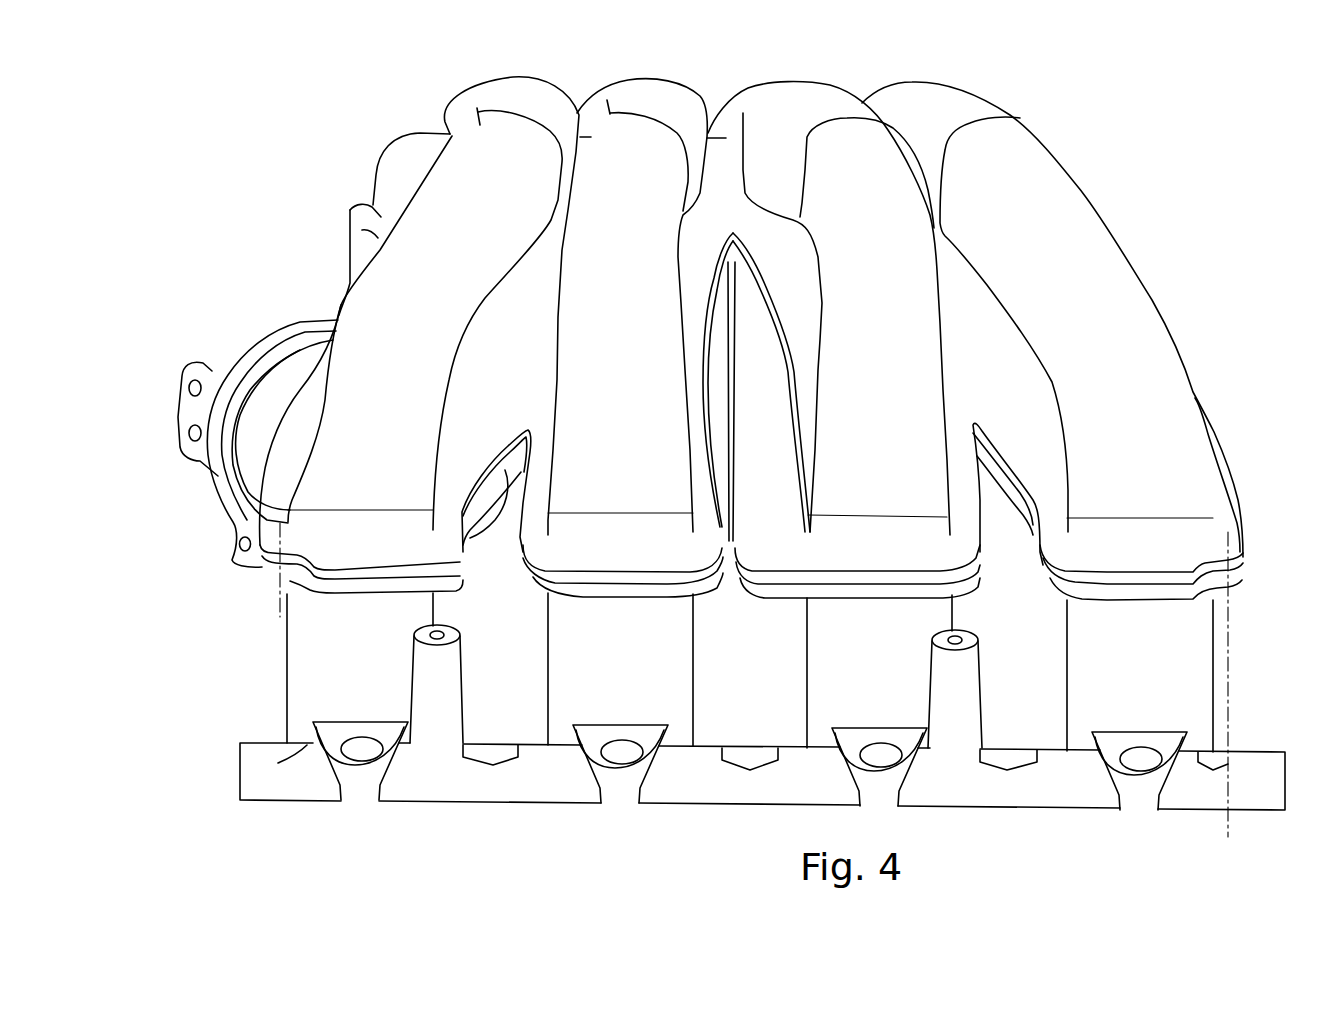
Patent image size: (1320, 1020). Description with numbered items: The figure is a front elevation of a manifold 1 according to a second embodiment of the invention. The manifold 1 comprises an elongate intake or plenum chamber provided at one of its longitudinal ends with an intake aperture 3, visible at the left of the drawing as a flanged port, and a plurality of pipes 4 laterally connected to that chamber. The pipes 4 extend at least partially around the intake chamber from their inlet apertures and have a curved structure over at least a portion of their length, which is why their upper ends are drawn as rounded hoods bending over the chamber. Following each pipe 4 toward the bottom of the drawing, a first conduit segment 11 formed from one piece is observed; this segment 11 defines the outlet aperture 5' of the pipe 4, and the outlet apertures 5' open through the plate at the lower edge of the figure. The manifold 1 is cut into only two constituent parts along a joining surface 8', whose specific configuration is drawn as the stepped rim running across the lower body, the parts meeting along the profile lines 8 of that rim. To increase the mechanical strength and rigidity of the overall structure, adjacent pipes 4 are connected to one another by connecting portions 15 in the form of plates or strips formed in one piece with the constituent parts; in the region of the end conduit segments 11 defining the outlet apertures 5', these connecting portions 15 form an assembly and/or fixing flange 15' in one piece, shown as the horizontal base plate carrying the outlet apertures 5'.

The manifold 1 is at (243, 182).
The intake aperture 3 is at (242, 478).
The pipes 4 is at (1095, 292).
The outlet aperture 5' is at (750, 808).
The flange rim 8 is at (690, 404).
The joining surface 8' is at (726, 603).
The first conduit segment 11 is at (657, 658).
The connecting portions 15 is at (595, 338).
The fixing flange 15' is at (762, 760).